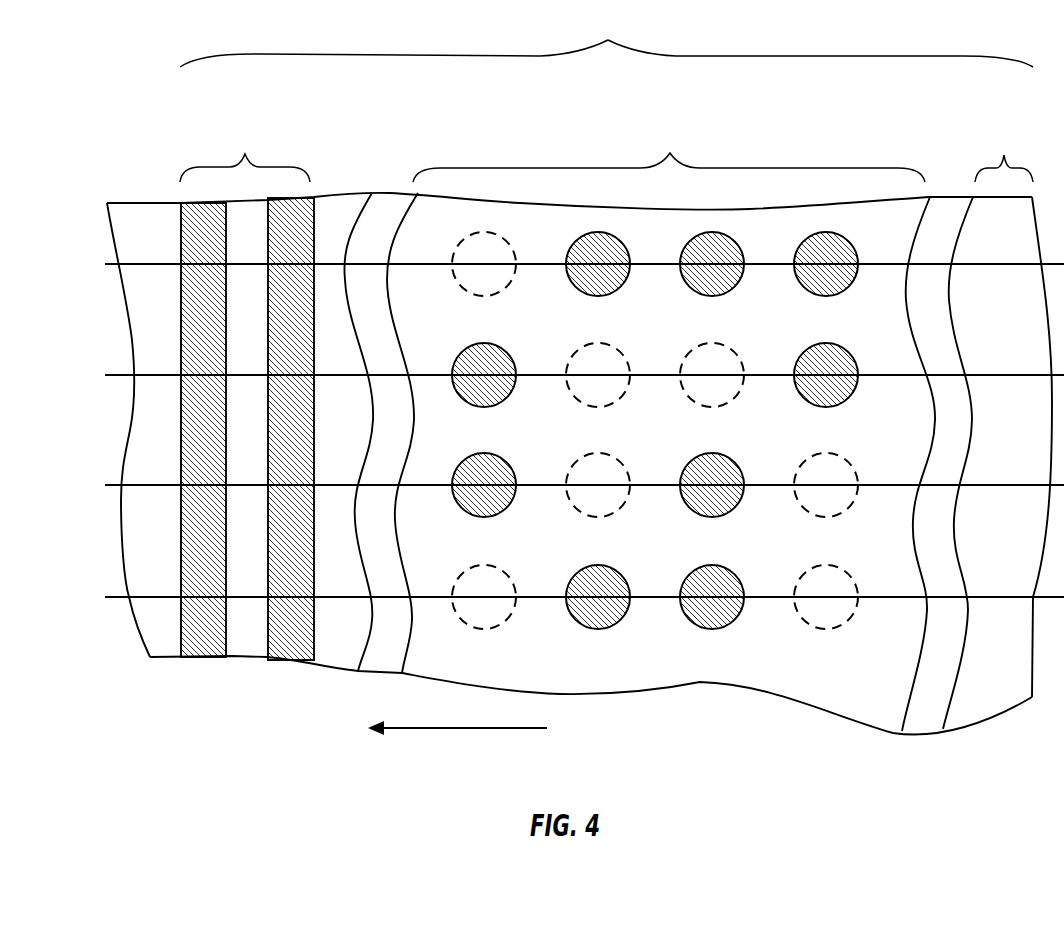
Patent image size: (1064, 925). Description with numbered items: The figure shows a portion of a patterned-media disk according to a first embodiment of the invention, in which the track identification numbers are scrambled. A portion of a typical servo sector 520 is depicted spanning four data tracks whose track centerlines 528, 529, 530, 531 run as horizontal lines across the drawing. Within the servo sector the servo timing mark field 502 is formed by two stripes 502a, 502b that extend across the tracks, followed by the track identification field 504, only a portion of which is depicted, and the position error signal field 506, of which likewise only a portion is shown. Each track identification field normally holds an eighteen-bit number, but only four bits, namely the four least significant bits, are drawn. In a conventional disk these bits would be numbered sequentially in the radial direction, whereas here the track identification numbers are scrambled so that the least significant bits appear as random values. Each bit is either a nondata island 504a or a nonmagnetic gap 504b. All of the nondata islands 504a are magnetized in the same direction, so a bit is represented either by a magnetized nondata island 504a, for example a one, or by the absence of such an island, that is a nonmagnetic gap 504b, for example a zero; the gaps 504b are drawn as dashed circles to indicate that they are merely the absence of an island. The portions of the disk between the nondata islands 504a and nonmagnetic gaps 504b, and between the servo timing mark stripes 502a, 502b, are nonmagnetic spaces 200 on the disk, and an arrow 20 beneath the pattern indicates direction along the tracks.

The servo sector 520 is at (606, 38).
The STM field 502 is at (257, 400).
The STM stripe 502a is at (197, 657).
The STM stripe 502b is at (295, 652).
The TID field 504 is at (668, 378).
The nondata island 504a is at (590, 235).
The nonmagnetic gap 504b is at (487, 233).
The PES field 506 is at (967, 412).
The track centerline 528 is at (105, 266).
The track centerline 529 is at (105, 377).
The track centerline 530 is at (105, 487).
The track centerline 531 is at (105, 599).
The nonmagnetic space 200 is at (245, 643).
The direction of motion 20 is at (471, 730).